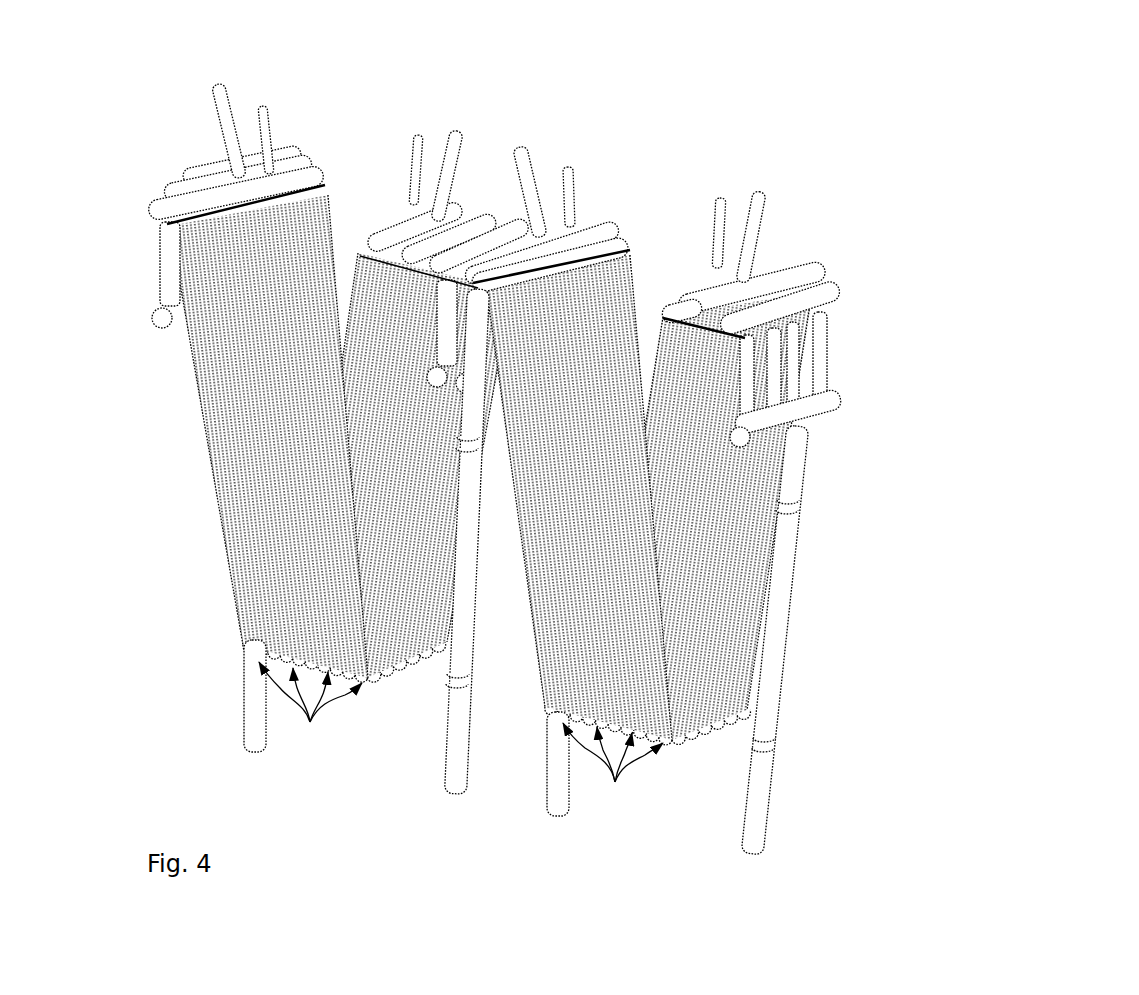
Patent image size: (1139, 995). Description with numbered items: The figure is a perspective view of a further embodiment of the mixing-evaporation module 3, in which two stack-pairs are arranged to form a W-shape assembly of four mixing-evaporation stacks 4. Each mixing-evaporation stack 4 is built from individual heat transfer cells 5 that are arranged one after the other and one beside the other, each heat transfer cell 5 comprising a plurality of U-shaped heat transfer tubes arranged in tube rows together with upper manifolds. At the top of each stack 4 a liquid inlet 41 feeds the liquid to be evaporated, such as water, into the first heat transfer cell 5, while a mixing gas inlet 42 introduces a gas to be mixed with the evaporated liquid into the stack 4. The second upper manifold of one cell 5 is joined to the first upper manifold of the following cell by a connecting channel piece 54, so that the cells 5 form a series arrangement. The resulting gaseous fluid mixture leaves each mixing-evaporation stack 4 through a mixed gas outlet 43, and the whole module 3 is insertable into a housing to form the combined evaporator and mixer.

The mixing-evaporation module 3 is at (594, 446).
The mixing-evaporation stack 4 is at (351, 489).
The heat transfer cell 5 is at (461, 742).
The liquid inlet 41 is at (719, 222).
The mixing gas inlet 42 is at (221, 108).
The mixed gas outlet 43 is at (252, 682).
The connecting channel piece 54 is at (207, 192).